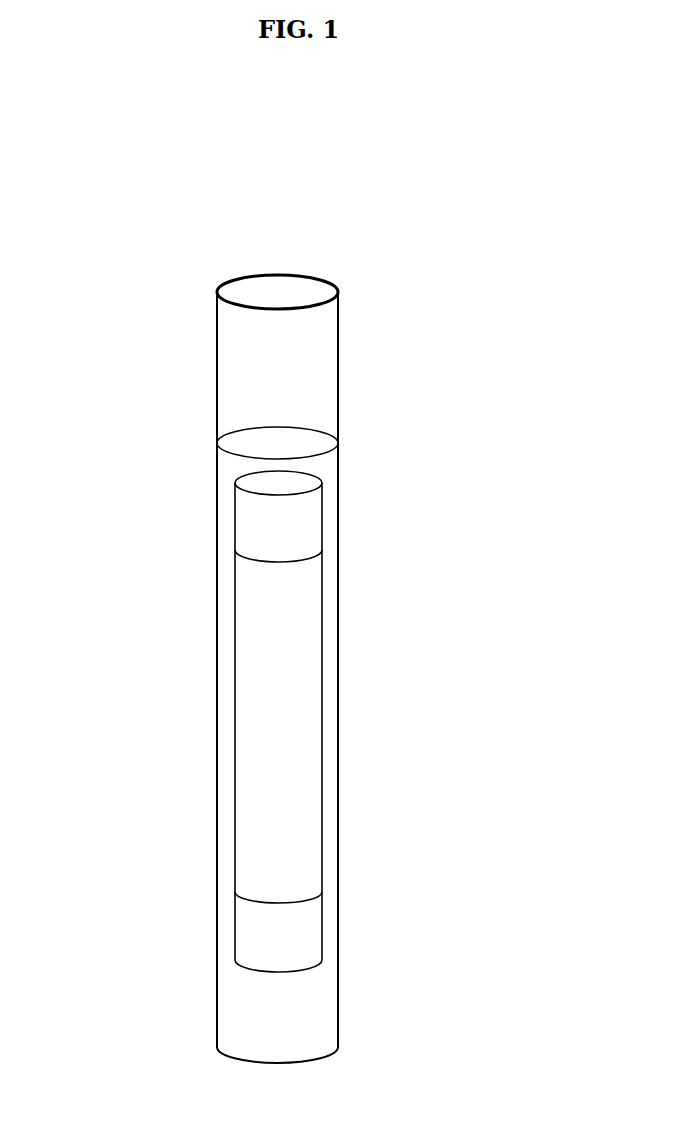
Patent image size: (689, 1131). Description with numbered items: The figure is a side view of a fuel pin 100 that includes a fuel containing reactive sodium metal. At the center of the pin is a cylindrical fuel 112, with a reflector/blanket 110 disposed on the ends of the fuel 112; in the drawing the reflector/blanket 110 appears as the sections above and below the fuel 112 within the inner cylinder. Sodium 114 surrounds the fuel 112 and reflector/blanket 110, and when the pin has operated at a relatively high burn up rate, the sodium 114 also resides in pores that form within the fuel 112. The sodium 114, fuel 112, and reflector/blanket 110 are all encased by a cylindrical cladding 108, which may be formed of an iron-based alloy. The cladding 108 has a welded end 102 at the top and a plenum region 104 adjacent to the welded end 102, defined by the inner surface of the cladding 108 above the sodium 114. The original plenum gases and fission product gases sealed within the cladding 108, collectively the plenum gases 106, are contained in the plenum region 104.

The fuel pin 100 is at (296, 196).
The welded end 102 is at (217, 291).
The plenum region 104 is at (338, 347).
The plenum gases 106 is at (278, 384).
The cladding 108 is at (216, 525).
The reflector/blanket 110 is at (294, 926).
The fuel 112 is at (258, 705).
The sodium 114 is at (230, 841).